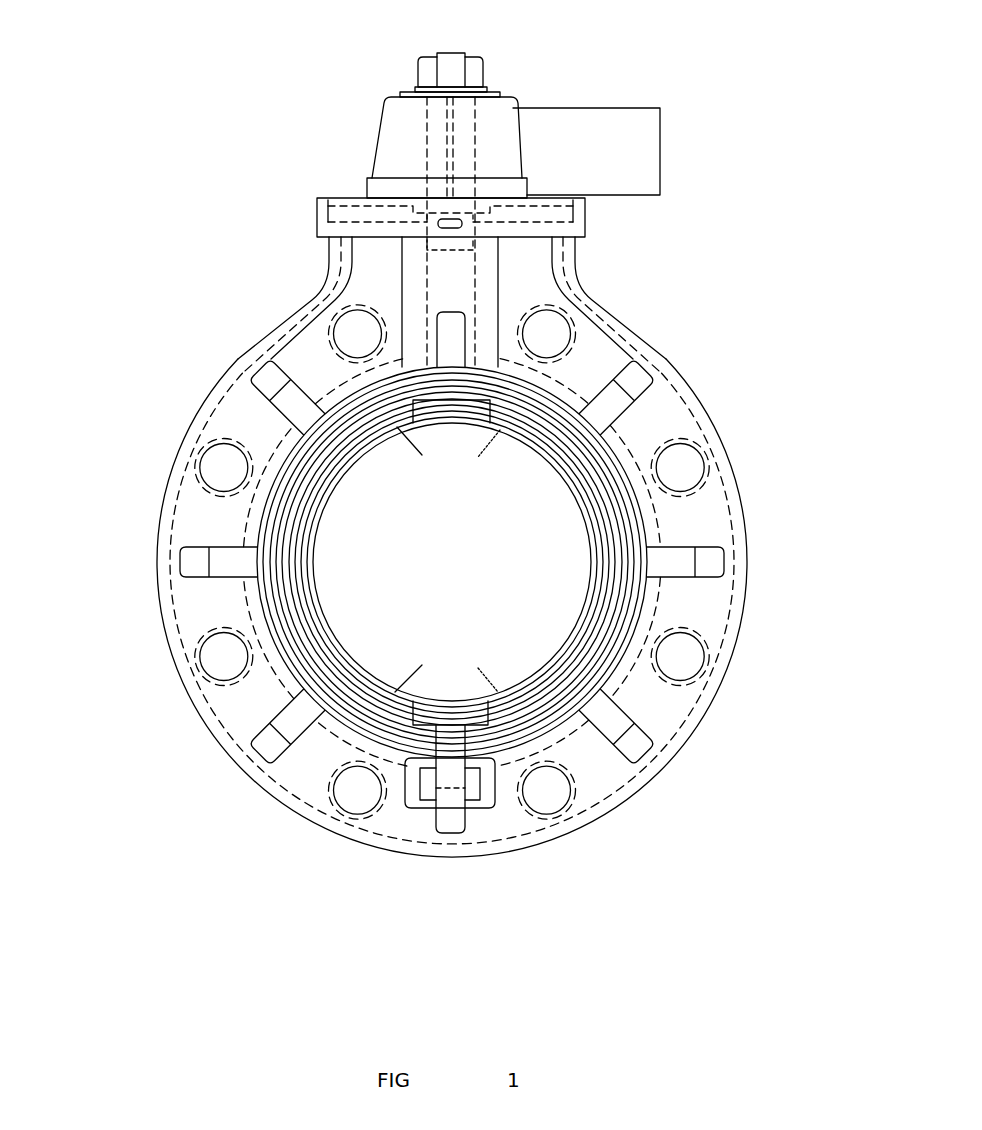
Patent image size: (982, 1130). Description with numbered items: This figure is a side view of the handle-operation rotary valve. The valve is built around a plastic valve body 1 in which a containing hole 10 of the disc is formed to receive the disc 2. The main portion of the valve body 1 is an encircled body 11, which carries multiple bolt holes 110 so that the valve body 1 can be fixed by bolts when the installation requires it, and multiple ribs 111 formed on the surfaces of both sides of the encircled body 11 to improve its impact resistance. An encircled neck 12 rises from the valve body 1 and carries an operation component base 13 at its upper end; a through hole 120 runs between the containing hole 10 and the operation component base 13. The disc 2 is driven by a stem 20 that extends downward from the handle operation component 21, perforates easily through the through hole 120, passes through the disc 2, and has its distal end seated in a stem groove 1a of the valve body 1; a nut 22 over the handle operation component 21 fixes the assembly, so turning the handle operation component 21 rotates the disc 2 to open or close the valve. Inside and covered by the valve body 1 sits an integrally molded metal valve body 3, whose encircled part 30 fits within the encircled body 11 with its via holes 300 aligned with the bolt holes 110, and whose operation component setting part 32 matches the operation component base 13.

The valve body 1 is at (618, 808).
The stem groove 1a is at (434, 760).
The disc 2 is at (537, 575).
The metal valve body 3 is at (210, 715).
The containing hole of the disc 10 is at (548, 637).
The encircled body 11 is at (658, 415).
The encircled neck 12 is at (377, 259).
The through hole 120 is at (430, 298).
The operation component base 13 is at (323, 212).
The stem 20 is at (426, 150).
The handle operation component 21 is at (621, 124).
The nut 22 is at (428, 70).
The encircled part 30 is at (163, 604).
The via holes 300 is at (195, 643).
The operation component setting part 32 is at (537, 220).
The bolt holes 110 is at (358, 336).
The ribs 111 is at (287, 400).